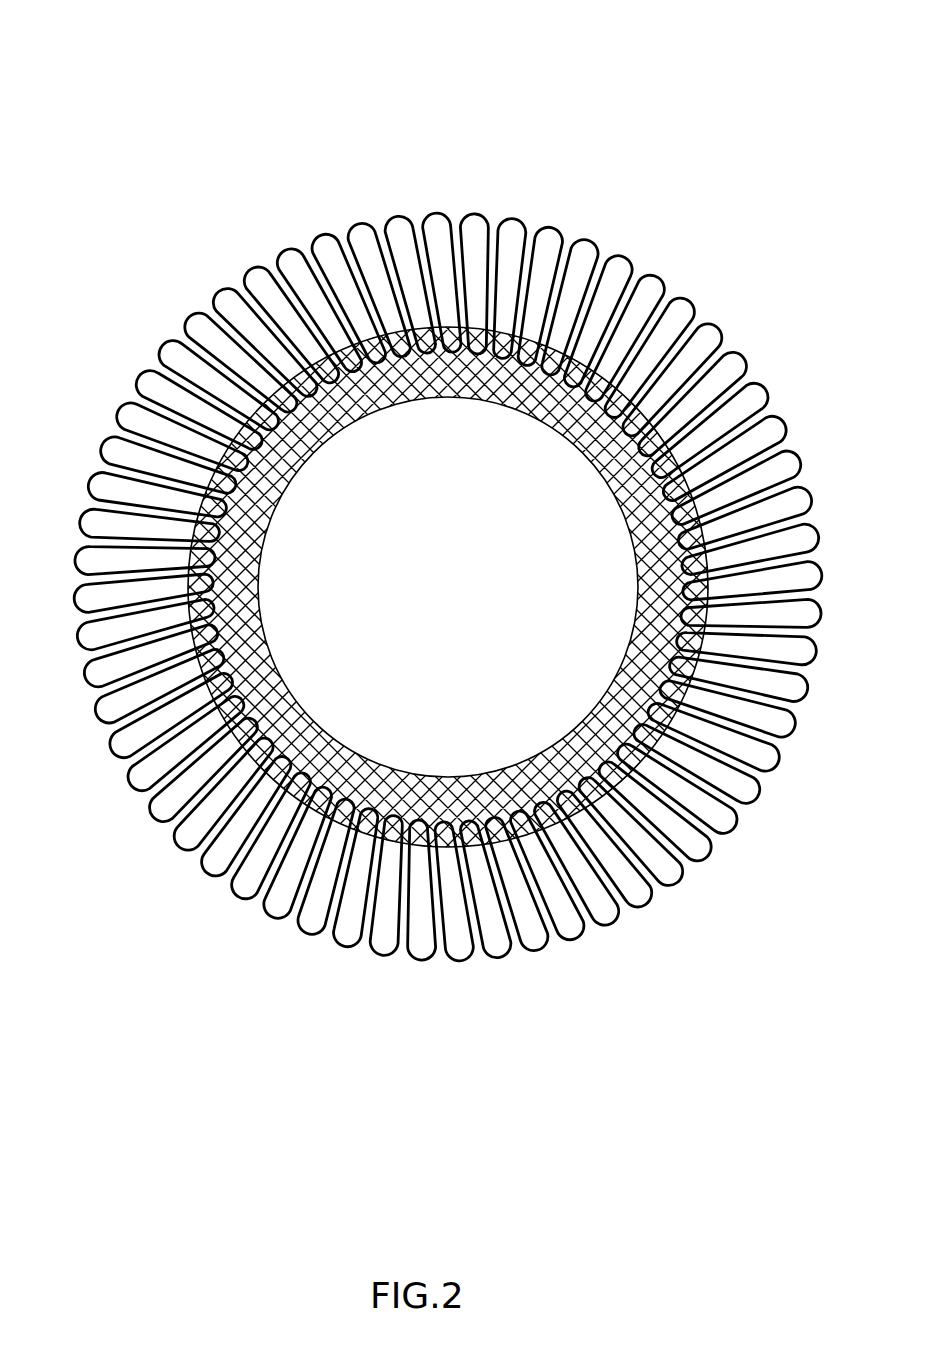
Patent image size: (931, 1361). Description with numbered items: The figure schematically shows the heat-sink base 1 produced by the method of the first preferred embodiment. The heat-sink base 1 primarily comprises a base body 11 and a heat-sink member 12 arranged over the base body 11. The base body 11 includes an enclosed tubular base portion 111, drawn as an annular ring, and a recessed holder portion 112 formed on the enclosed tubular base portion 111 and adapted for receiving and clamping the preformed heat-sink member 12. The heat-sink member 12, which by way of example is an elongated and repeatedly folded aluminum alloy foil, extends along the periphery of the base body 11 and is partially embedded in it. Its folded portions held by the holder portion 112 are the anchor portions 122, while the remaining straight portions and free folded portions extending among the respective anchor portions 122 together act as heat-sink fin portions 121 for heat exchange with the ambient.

The heat-sink base 1 is at (448, 485).
The base body 11 is at (448, 587).
The enclosed tubular base portion 111 is at (407, 397).
The recessed holder portion 112 is at (327, 413).
The heat-sink member 12 is at (448, 485).
The heat-sink fin portions 121 is at (557, 225).
The anchor portions 122 is at (463, 218).